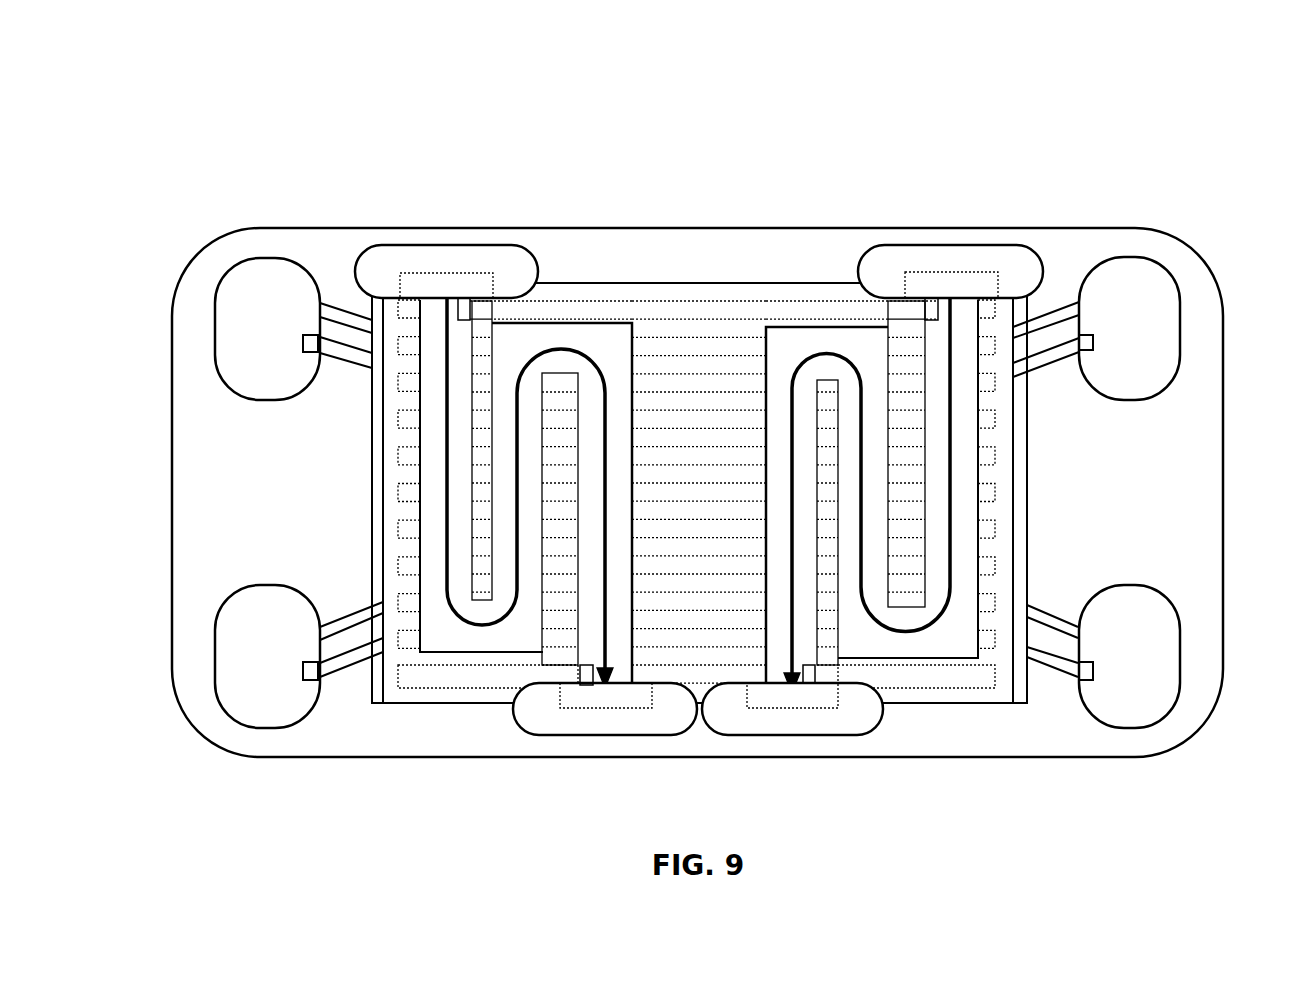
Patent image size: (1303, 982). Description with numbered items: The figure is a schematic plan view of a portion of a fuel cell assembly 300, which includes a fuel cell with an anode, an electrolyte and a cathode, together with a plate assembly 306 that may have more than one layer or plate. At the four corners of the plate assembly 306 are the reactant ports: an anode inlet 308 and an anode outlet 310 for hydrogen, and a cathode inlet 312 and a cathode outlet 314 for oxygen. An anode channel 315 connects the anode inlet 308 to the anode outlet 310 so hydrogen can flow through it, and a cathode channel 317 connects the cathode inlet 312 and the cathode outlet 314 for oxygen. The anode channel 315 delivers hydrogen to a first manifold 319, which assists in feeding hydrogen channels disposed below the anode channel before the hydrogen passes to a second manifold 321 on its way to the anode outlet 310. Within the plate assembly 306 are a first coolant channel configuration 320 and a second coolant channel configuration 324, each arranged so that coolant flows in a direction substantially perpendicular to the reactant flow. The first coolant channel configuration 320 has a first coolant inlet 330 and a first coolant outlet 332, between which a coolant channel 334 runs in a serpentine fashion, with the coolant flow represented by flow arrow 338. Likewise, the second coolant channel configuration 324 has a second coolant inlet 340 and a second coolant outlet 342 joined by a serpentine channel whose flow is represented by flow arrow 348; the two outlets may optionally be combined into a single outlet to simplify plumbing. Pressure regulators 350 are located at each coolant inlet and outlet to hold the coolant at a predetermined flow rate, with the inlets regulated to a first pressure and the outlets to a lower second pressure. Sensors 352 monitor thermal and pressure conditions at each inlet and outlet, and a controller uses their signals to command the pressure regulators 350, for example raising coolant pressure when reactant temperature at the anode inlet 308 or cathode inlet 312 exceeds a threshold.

The fuel cell assembly 300 is at (992, 101).
The plate assembly 306 is at (748, 233).
The anode inlet 308 is at (288, 344).
The anode outlet 310 is at (1151, 671).
The cathode inlet 312 is at (1151, 344).
The cathode outlet 314 is at (288, 671).
The anode channel 315 is at (1058, 628).
The cathode channel 317 is at (350, 640).
The first manifold 319 is at (367, 530).
The first coolant channel configuration 320 is at (564, 332).
The second manifold 321 is at (1030, 530).
The second coolant channel configuration 324 is at (838, 320).
The first coolant inlet 330 is at (437, 268).
The first coolant outlet 332 is at (604, 735).
The coolant channel 334 is at (1000, 475).
The flow arrow 338 is at (447, 492).
The second coolant inlet 340 is at (918, 245).
The second coolant outlet 342 is at (793, 735).
The flow arrow 348 is at (950, 492).
The pressure regulators 350 is at (757, 708).
The sensors 352 is at (810, 677).